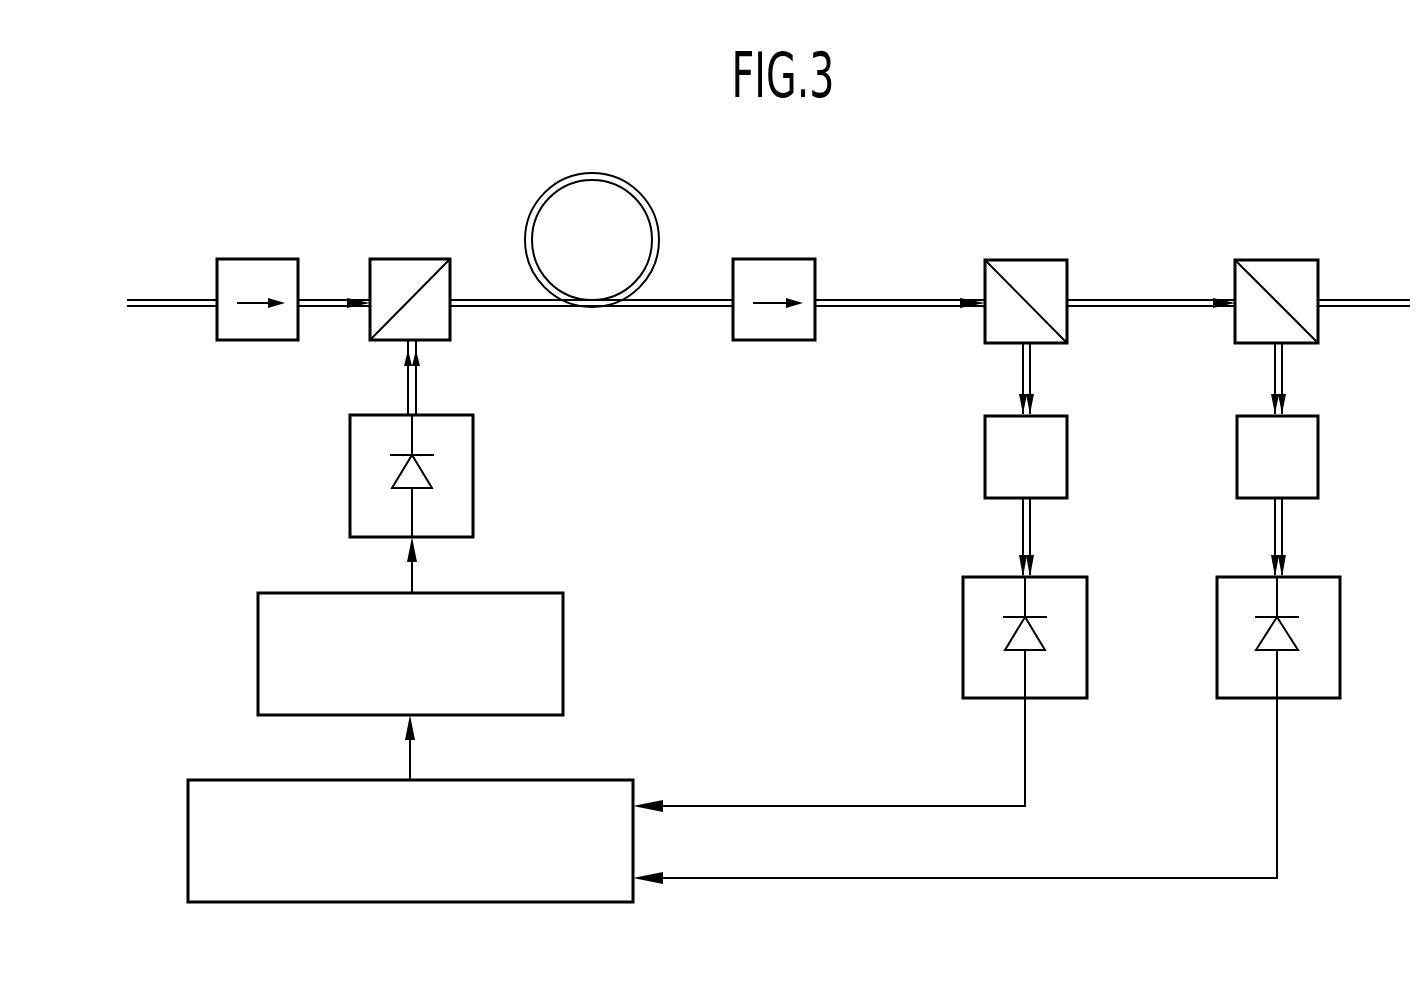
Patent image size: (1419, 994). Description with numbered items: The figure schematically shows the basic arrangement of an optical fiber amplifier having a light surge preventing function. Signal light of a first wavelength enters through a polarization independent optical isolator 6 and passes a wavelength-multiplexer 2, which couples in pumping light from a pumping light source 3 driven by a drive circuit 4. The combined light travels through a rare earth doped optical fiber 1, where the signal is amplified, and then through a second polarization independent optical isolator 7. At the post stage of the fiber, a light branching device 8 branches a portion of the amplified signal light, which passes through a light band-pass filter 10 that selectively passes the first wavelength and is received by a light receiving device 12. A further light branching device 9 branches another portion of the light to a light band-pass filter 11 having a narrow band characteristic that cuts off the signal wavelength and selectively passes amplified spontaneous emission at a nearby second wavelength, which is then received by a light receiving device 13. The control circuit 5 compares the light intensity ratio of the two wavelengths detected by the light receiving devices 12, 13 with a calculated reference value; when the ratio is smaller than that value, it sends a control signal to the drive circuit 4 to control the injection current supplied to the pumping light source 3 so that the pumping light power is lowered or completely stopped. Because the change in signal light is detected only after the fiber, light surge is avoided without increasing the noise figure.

The rare earth doped optical fiber 1 is at (540, 200).
The wavelength-multiplexer 2 is at (380, 259).
The pumping light source 3 is at (473, 518).
The drive circuit 4 is at (563, 697).
The control circuit 5 is at (598, 780).
The polarization independent optical isolator 6 is at (230, 259).
The polarization independent optical isolator 7 is at (748, 259).
The light branching device 8 is at (1000, 260).
The light branching device 9 is at (1250, 260).
The light band-pass filter 10 is at (1067, 486).
The light band-pass filter 11 is at (1318, 486).
The light receiving device 12 is at (1087, 673).
The light receiving device 13 is at (1340, 673).